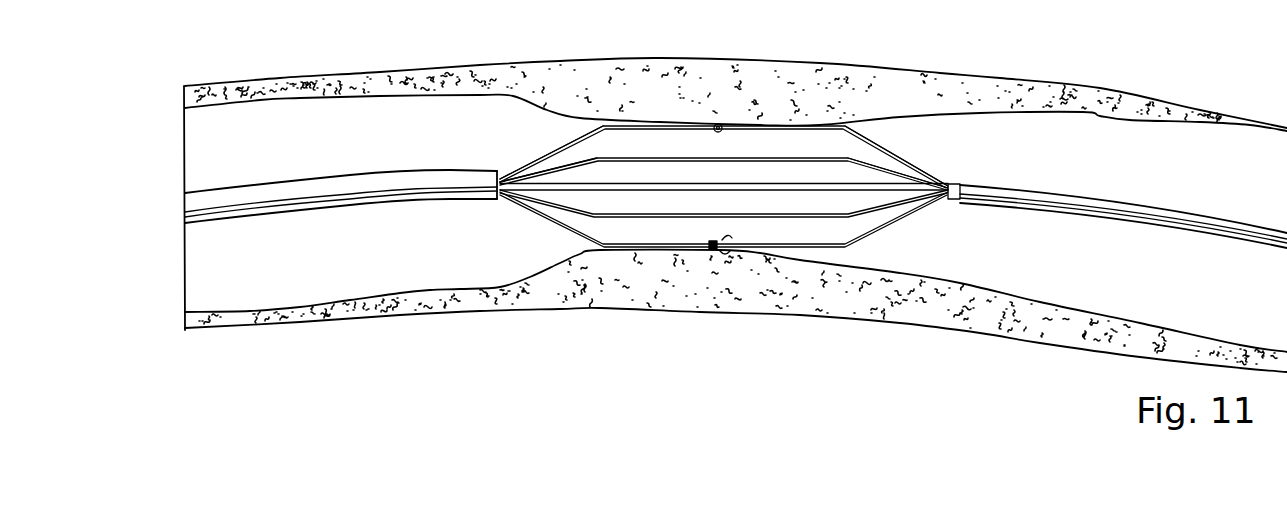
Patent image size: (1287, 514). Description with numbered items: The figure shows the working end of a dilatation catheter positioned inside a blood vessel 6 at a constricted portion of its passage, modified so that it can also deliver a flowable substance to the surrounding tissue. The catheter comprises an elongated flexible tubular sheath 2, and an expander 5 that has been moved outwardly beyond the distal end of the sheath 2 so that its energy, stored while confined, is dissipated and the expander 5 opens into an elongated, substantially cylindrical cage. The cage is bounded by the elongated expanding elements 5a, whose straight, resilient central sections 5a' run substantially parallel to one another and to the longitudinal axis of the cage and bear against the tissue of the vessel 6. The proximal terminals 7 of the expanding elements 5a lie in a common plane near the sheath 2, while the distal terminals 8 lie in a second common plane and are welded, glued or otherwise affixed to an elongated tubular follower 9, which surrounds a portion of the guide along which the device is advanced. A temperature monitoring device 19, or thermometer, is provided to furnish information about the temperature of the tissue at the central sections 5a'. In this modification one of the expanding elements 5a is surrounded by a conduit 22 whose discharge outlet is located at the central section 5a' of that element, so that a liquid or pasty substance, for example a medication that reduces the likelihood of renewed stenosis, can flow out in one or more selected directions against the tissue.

The tubular sheath 2 is at (313, 204).
The expander 5 is at (703, 191).
The expanding elements 5a is at (724, 101).
The central sections of the expanding elements 5a' is at (724, 280).
The blood vessel 6 is at (917, 323).
The proximal terminals 7 is at (532, 165).
The distal terminals 8 is at (928, 182).
The tubular follower 9 is at (1057, 200).
The temperature monitoring device 19 is at (718, 128).
The conduit 22 is at (677, 246).